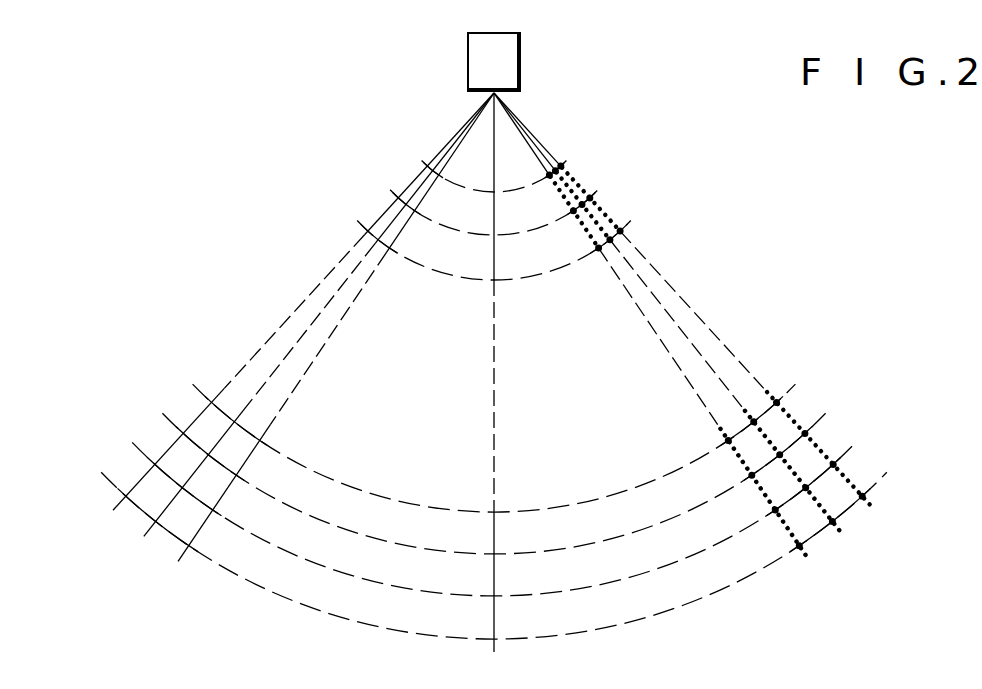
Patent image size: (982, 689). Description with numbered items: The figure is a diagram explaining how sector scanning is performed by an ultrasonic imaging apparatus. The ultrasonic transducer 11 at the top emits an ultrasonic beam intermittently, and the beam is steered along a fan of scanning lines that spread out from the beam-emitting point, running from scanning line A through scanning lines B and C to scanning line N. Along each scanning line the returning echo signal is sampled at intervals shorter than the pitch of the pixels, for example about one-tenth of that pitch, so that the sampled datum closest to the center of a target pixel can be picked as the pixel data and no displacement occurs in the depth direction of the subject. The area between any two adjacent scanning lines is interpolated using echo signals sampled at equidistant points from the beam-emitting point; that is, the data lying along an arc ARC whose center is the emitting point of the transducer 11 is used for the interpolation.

The ultrasonic transducer 11 is at (520, 72).
The scanning line A is at (872, 492).
The scanning line B is at (836, 524).
The scanning line C is at (800, 548).
The scanning line N is at (115, 512).
The arc ARC is at (308, 604).